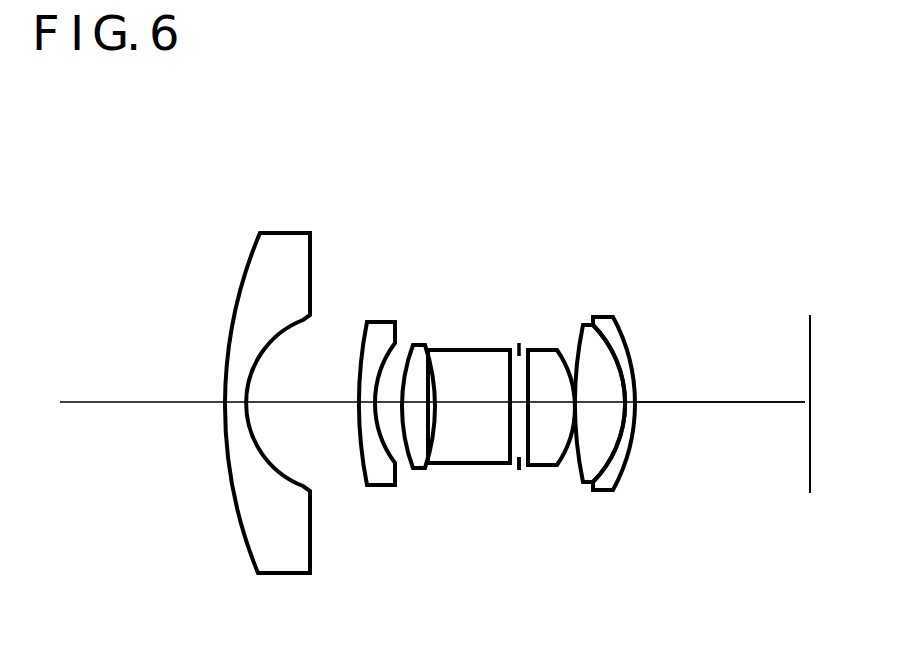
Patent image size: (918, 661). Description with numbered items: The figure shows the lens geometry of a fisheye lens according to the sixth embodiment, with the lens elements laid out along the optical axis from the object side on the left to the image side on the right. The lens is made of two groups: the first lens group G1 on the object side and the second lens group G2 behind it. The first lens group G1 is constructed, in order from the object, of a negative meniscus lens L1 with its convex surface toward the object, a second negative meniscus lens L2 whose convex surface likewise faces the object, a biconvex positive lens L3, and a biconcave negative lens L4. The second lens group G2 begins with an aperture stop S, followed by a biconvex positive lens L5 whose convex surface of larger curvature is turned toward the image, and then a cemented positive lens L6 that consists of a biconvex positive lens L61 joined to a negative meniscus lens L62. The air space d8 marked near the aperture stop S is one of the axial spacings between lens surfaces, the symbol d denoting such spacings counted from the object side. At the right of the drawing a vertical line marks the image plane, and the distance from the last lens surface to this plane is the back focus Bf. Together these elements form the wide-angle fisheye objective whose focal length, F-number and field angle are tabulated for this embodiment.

The first lens group G1 is at (492, 178).
The second lens group G2 is at (618, 192).
The negative meniscus lens L1 is at (262, 232).
The negative meniscus lens L2 is at (382, 320).
The biconvex positive lens L3 is at (418, 345).
The biconcave negative lens L4 is at (477, 347).
The aperture stop S is at (518, 343).
The lens surface spacing d8 is at (518, 463).
The biconvex positive lens L5 is at (547, 350).
The cemented positive lens L6 is at (573, 399).
The biconvex positive lens L61 is at (580, 473).
The negative meniscus lens L62 is at (613, 456).
The back focus Bf is at (692, 402).